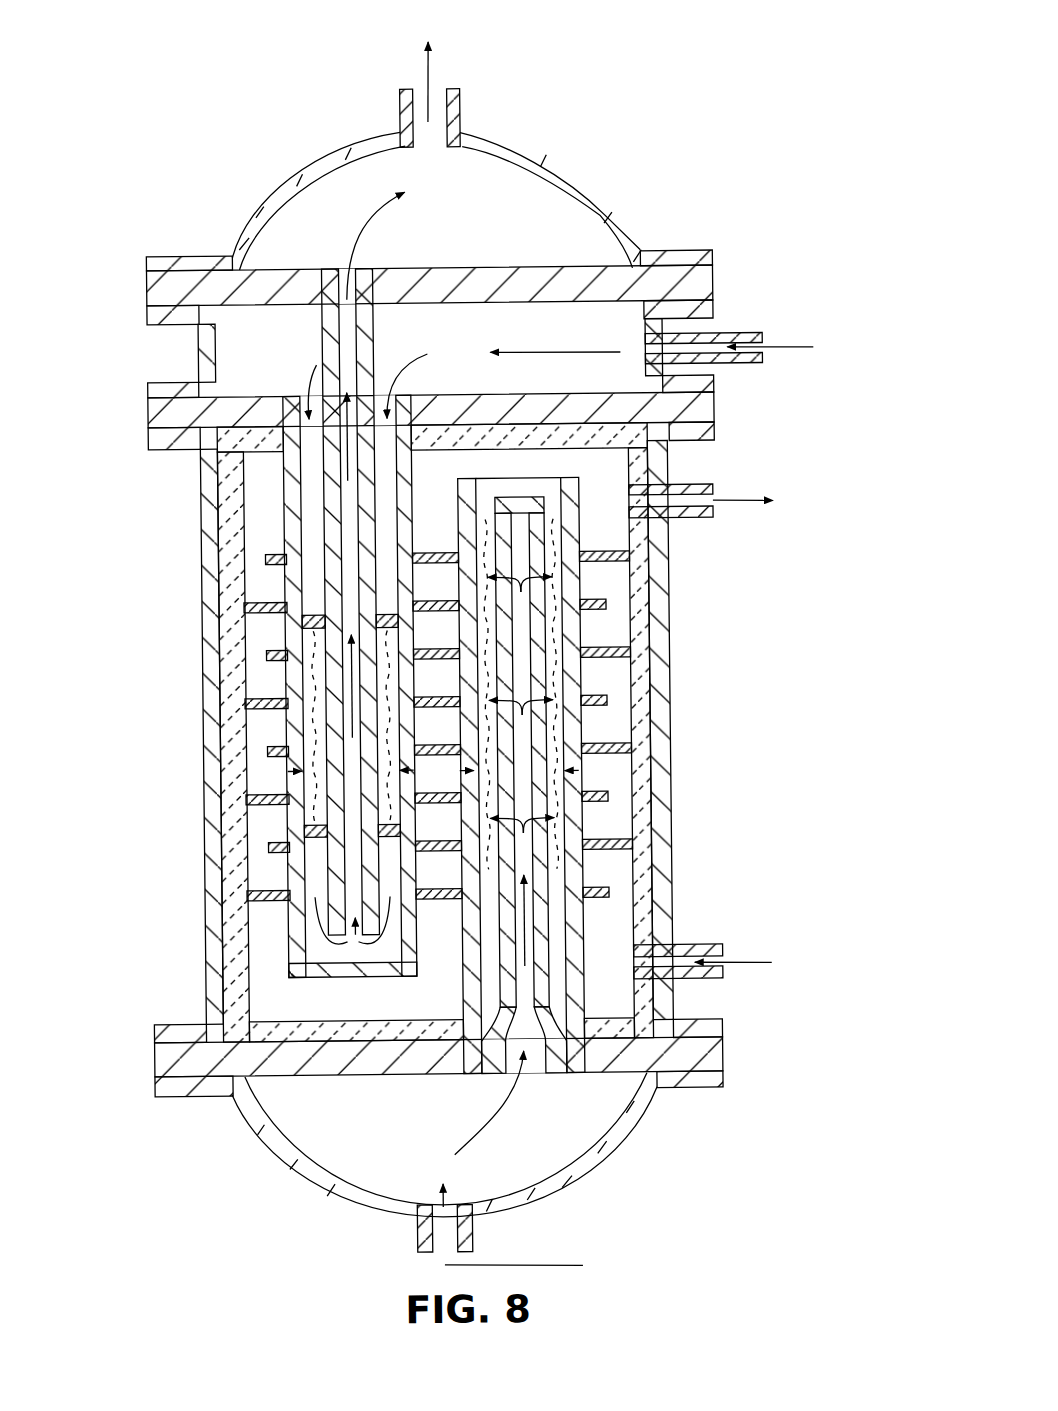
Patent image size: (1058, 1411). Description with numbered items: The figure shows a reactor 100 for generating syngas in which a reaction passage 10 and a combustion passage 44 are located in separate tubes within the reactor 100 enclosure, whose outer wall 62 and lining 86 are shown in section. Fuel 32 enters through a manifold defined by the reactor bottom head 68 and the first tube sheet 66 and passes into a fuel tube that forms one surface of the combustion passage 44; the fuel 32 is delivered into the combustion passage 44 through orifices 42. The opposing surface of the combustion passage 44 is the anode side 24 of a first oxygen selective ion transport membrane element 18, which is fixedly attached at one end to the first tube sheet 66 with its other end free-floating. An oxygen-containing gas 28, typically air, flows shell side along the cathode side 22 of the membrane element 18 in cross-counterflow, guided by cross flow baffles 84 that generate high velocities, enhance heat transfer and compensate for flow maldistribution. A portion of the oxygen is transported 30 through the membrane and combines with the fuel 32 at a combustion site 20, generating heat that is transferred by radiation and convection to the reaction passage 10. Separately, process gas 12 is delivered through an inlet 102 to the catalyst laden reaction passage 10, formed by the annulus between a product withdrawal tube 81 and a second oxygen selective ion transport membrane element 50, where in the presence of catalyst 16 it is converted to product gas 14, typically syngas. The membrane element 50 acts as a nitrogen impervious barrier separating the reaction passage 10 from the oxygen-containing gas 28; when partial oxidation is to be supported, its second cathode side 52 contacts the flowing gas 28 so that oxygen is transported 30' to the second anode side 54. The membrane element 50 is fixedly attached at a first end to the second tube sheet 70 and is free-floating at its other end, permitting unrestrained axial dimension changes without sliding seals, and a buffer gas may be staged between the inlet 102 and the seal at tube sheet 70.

The reactor 100 is at (264, 150).
The product gas 14 is at (434, 67).
The product withdrawal tube 81 is at (461, 115).
The inlet 102 is at (722, 340).
The process gas 12 is at (789, 351).
The second tube sheet 70 is at (166, 414).
The outer shell 62 is at (659, 635).
The refractory insulation 86 is at (646, 875).
The oxygen-containing gas 28 is at (755, 961).
The first tube sheet 66 is at (711, 1058).
The reactor bottom head 68 is at (612, 1135).
The second oxygen selective ion transport membrane element 50 is at (293, 579).
The reaction passage 10 is at (310, 712).
The second anode side 54 is at (312, 539).
The second cathode side 52 is at (299, 626).
The catalyst 16 is at (310, 661).
The oxygen transport 30' is at (284, 796).
The cross flow baffles 84 is at (612, 549).
The first oxygen selective ion transport membrane element 18 is at (574, 575).
The anode side 24 is at (555, 684).
The fuel 32 is at (540, 921).
The combustion site 20 is at (548, 616).
The combustion passage 44 is at (553, 733).
The orifices 42 is at (552, 829).
The cathode side 22 is at (581, 765).
The oxygen transport 30 is at (644, 783).